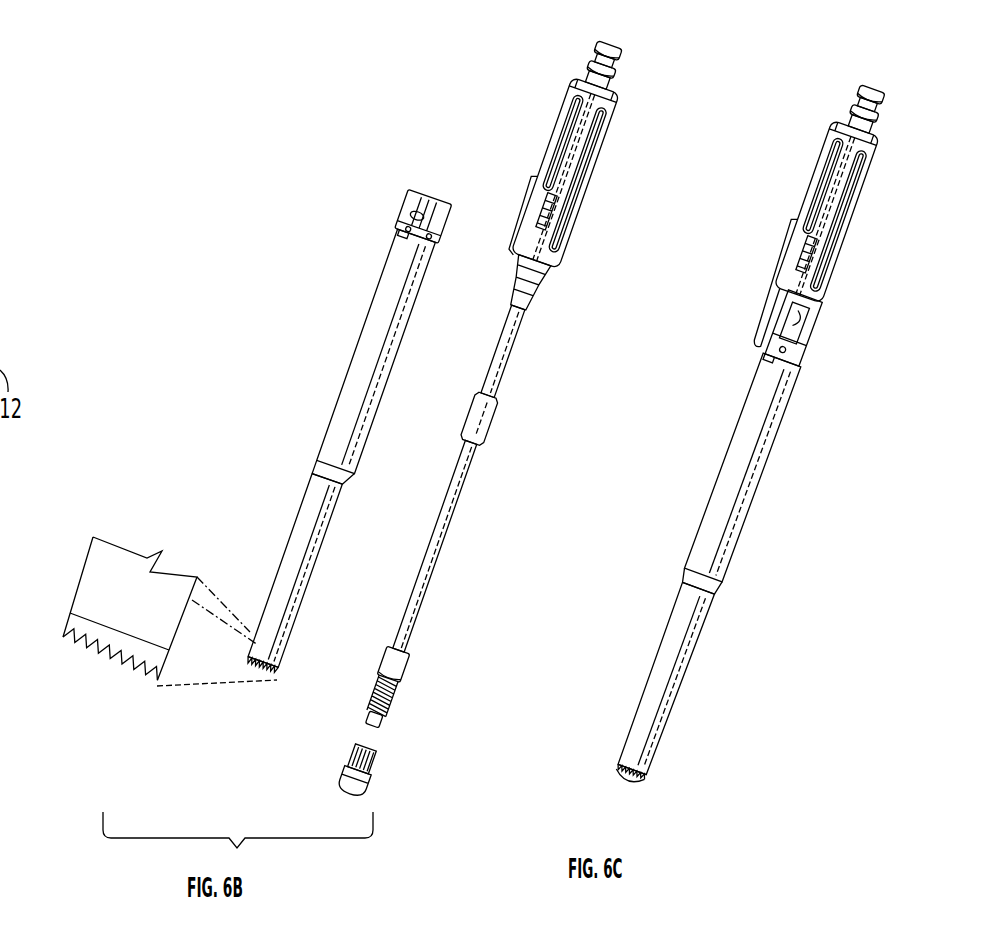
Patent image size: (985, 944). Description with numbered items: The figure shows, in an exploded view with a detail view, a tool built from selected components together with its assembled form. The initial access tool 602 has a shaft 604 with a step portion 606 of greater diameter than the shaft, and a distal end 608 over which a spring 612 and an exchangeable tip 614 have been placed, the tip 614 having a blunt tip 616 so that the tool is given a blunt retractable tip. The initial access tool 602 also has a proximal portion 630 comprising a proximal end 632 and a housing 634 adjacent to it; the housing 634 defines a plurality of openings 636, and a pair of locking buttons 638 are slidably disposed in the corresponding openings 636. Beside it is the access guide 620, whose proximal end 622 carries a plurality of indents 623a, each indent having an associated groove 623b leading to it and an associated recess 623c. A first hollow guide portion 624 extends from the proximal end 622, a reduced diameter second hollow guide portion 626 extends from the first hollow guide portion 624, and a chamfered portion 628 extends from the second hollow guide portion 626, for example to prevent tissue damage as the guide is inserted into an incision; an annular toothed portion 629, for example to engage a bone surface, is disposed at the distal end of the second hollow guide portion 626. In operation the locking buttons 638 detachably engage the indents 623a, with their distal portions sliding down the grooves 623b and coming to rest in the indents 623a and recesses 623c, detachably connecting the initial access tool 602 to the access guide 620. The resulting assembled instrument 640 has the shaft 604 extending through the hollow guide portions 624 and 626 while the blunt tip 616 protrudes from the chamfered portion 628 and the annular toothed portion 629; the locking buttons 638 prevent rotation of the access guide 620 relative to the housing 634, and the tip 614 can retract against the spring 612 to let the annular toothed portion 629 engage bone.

In FIG. 6B, the initial access tool 602 is at (529, 177).
In FIG. 6C, the initial access tool 602 is at (794, 222).
In FIG. 6B, the shaft 604 is at (510, 366).
In FIG. 6B, the step portion 606 is at (403, 670).
In FIG. 6B, the distal end 608 is at (380, 722).
In FIG. 6B, the spring 612 is at (394, 694).
In FIG. 6B, the exchangeable tip 614 is at (333, 775).
In FIG. 6C, the blunt tip 616 is at (632, 788).
In FIG. 6B, the access guide 620 is at (426, 192).
In FIG. 6C, the access guide 620 is at (694, 533).
In FIG. 6B, the proximal end 622 is at (397, 240).
In FIG. 6B, the indents 623a is at (408, 234).
In FIG. 6B, the groove 623b is at (414, 218).
In FIG. 6C, the groove 623b is at (797, 333).
In FIG. 6B, the recess 623c is at (397, 238).
In FIG. 6C, the recess 623c is at (765, 358).
In FIG. 6B, the first hollow guide portion 624 is at (373, 363).
In FIG. 6C, the first hollow guide portion 624 is at (740, 506).
In FIG. 6B, the second hollow guide portion 626 is at (282, 580).
In FIG. 6C, the second hollow guide portion 626 is at (669, 698).
In FIG. 6B, the chamfered portion 628 is at (195, 629).
In FIG. 6C, the chamfered portion 628 is at (634, 763).
In FIG. 6B, the annular toothed portion 629 is at (93, 663).
In FIG. 6C, the annular toothed portion 629 is at (623, 768).
In FIG. 6B, the proximal portion 630 is at (565, 150).
In FIG. 6B, the proximal end 632 is at (622, 72).
In FIG. 6C, the proximal end 632 is at (885, 120).
In FIG. 6B, the housing 634 is at (622, 100).
In FIG. 6C, the housing 634 is at (883, 143).
In FIG. 6B, the openings 636 is at (577, 187).
In FIG. 6B, the locking buttons 638 is at (527, 270).
In FIG. 6C, the locking buttons 638 is at (773, 313).
In FIG. 6C, the assembled instrument 640 is at (866, 84).